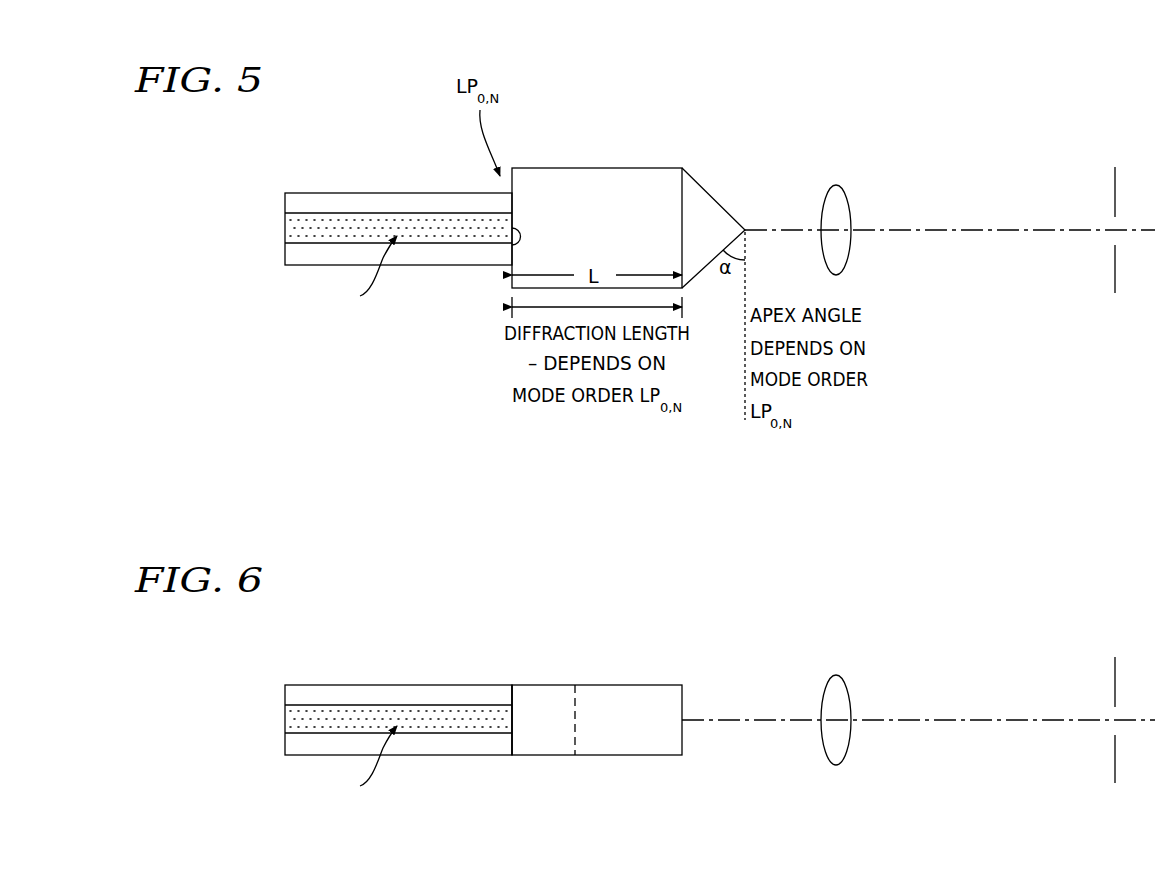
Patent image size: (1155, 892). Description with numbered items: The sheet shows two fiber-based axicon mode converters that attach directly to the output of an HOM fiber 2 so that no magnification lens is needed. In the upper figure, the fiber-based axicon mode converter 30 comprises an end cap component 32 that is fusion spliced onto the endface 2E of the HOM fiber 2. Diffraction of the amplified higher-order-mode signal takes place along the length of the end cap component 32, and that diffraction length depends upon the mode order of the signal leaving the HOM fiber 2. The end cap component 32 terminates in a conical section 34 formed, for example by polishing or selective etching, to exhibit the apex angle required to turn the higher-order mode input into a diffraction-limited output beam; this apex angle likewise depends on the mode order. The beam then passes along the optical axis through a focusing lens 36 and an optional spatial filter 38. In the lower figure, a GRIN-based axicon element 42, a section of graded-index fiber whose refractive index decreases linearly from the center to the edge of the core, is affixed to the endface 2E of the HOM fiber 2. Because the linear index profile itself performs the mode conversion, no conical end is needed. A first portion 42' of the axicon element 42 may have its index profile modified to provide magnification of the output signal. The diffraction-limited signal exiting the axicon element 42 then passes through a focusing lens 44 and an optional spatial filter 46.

In FIG. 5, the HOM fiber 2 is at (287, 196).
In FIG. 6, the HOM fiber 2 is at (287, 688).
In FIG. 5, the endface of HOM fiber 2E is at (512, 248).
In FIG. 6, the endface of HOM fiber 2E is at (511, 694).
In FIG. 5, the fiber-based axicon mode converter 30 is at (972, 122).
In FIG. 5, the end cap component 32 is at (660, 186).
In FIG. 5, the conical section 34 is at (708, 210).
In FIG. 5, the focusing lens 36 is at (838, 185).
In FIG. 5, the spatial filter 38 is at (1115, 193).
In FIG. 6, the GRIN-based axicon element 42 is at (597, 700).
In FIG. 6, the first portion of axicon element 42' is at (553, 751).
In FIG. 6, the focusing lens 44 is at (838, 675).
In FIG. 6, the spatial filter 46 is at (1115, 683).